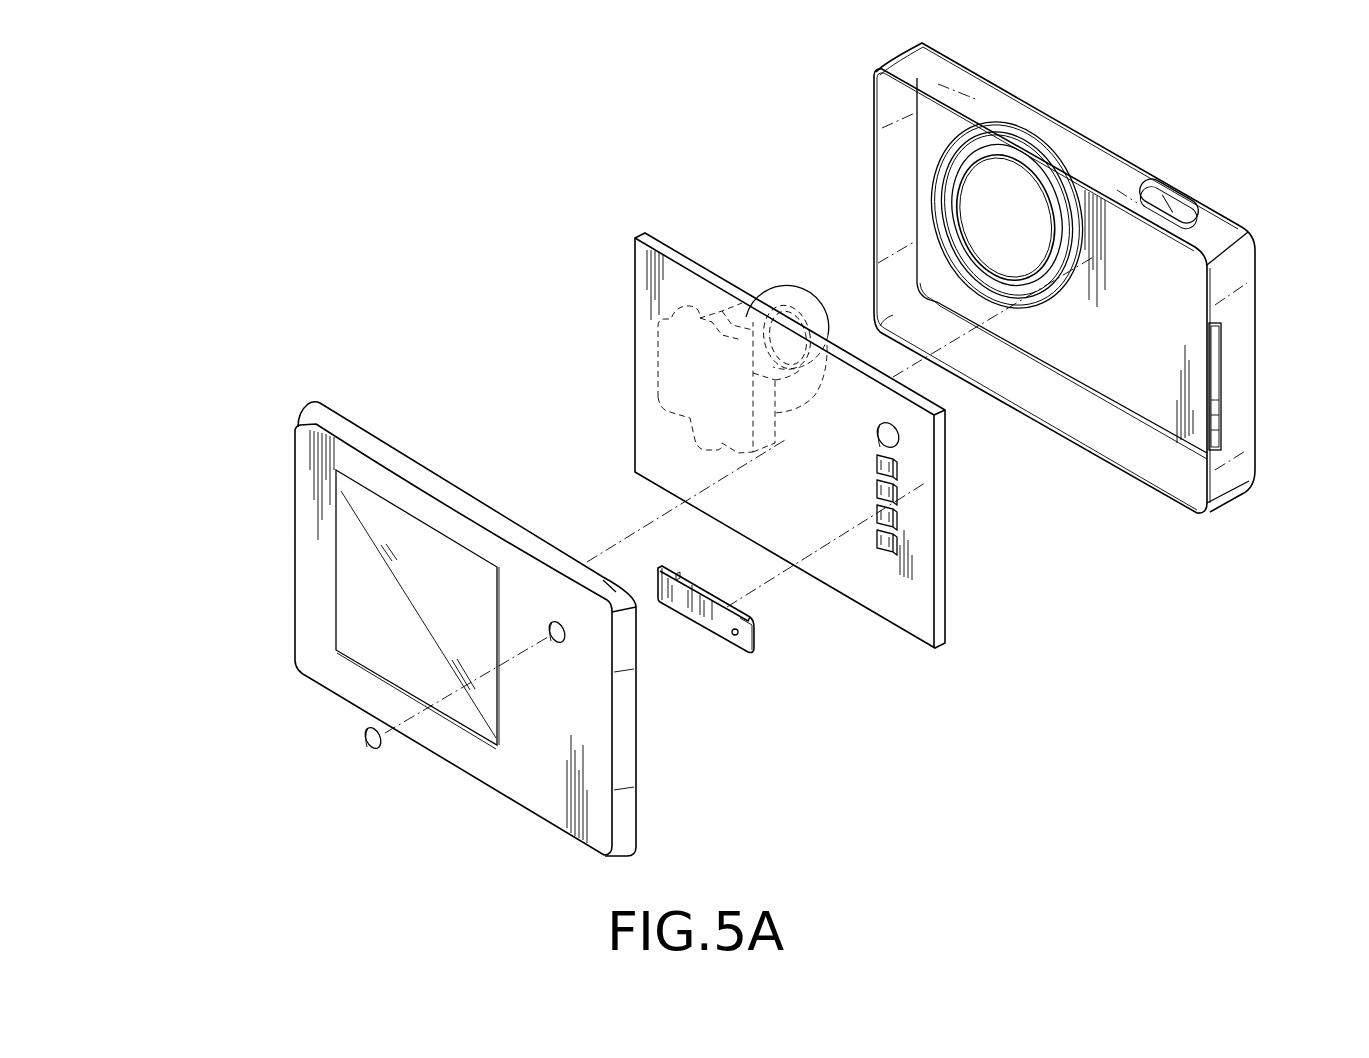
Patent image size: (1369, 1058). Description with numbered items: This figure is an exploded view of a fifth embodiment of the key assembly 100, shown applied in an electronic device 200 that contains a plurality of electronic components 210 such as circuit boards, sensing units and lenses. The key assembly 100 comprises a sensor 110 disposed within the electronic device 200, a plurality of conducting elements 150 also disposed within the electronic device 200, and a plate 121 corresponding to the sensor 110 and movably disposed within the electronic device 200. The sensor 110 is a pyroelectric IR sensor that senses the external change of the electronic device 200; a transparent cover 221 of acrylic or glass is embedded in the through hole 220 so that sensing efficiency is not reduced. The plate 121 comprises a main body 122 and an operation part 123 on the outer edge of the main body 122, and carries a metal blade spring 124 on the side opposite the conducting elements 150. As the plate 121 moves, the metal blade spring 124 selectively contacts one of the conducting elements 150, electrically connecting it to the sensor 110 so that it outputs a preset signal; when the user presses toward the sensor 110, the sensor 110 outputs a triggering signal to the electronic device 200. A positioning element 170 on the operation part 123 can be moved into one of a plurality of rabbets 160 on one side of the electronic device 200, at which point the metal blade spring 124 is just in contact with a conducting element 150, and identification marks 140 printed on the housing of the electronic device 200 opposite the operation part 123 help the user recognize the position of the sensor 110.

The key assembly 100 is at (615, 330).
The electronic device 200 is at (313, 507).
The electronic components 210 is at (743, 297).
The sensor 110 is at (895, 449).
The conducting elements 150 is at (890, 470).
The rabbets 160 is at (1213, 355).
The through hole 220 is at (552, 622).
The transparent cover 221 is at (366, 740).
The plate 121 is at (828, 686).
The main body 122 is at (700, 630).
The operation part 123 is at (748, 633).
The metal blade spring 124 is at (682, 610).
The positioning element 170 is at (740, 637).
The identification marks 140 is at (593, 687).